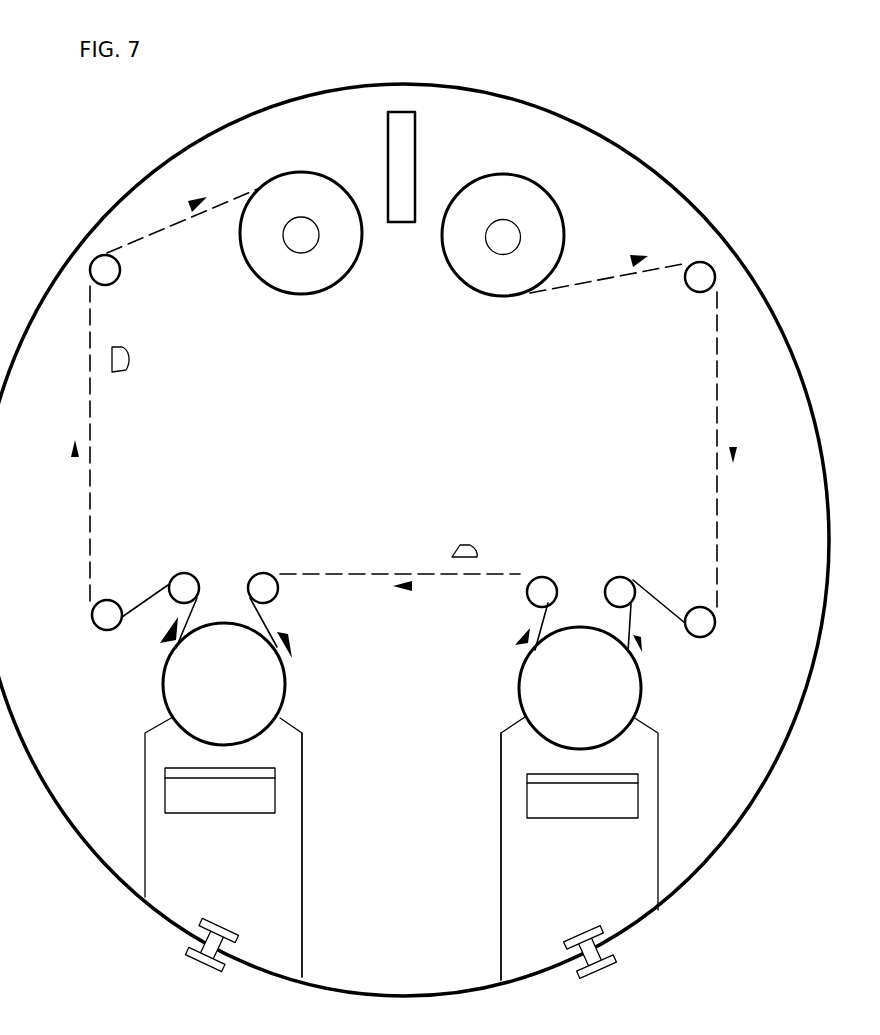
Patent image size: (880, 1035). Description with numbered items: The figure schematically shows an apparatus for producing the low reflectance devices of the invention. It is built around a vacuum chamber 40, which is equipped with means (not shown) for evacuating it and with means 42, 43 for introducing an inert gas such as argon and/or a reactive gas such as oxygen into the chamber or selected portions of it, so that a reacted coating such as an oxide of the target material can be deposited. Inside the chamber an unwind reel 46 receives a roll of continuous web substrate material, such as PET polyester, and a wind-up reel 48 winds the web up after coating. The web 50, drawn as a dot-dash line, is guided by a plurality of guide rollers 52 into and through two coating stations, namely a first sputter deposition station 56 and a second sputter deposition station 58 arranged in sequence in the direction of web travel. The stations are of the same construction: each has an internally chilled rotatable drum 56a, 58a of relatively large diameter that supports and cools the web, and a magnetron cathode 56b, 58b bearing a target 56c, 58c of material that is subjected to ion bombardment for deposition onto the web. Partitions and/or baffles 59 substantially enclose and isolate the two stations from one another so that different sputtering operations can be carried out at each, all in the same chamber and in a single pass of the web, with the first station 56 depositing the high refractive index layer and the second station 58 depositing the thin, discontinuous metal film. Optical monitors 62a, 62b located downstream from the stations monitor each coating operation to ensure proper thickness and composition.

The vacuum chamber 40 is at (652, 170).
The means for introducing gas 42 is at (607, 960).
The means for introducing gas 43 is at (197, 960).
The unwind reel 46 is at (522, 192).
The wind-up reel 48 is at (305, 187).
The web 50 is at (717, 400).
The guide rollers 52 is at (115, 272).
The first sputter deposition station 56 is at (595, 803).
The rotatable drum 56a is at (520, 680).
The magnetron cathode 56b is at (603, 807).
The target 56c is at (528, 778).
The second sputter deposition station 58 is at (235, 800).
The rotatable drum 58a is at (165, 680).
The magnetron cathode 58b is at (205, 803).
The target 58c is at (275, 780).
The partitions and/or baffles 59 is at (302, 780).
The optical monitor 62a is at (473, 546).
The optical monitor 62b is at (127, 368).